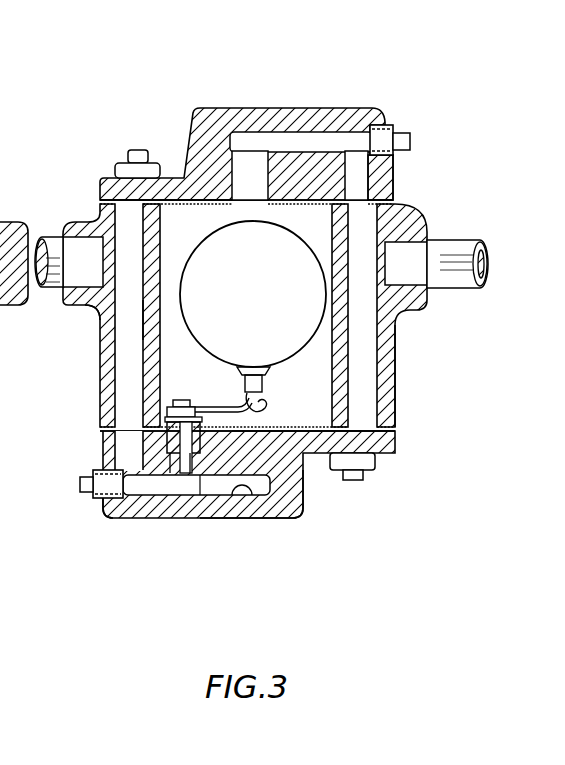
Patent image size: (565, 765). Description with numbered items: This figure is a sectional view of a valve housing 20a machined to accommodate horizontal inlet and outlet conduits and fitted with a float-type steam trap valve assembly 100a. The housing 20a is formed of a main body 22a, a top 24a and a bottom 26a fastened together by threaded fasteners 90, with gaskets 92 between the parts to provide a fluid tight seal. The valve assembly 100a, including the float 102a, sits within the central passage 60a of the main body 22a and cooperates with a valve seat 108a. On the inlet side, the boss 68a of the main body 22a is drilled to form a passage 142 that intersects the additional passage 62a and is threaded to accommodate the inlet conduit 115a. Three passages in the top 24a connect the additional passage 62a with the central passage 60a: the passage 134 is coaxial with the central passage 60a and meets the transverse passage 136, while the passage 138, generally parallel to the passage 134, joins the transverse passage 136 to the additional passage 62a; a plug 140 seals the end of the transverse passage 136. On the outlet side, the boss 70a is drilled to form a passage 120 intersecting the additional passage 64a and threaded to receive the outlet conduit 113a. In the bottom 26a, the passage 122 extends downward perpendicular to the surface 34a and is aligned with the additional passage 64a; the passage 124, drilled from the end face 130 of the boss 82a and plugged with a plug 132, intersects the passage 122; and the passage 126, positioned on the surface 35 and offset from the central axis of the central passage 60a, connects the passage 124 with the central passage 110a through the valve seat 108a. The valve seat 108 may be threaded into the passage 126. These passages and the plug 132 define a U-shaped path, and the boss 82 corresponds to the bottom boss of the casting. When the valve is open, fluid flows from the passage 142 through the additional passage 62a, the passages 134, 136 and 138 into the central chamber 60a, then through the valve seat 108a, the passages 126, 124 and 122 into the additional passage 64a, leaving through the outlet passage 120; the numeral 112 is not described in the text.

The valve housing 20a is at (143, 143).
The main body 22a is at (396, 380).
The top 24a is at (380, 100).
The bottom 26a is at (318, 511).
The surface of the bottom 34a is at (128, 415).
The surface of the bottom 35 is at (298, 430).
The central passage 60a is at (160, 325).
The additional passage 62a is at (393, 225).
The additional passage 64a is at (113, 224).
The boss 68a is at (396, 312).
The boss 70a is at (84, 330).
The boss 82 is at (0, 534).
The boss 82a is at (290, 519).
The threaded fasteners 90 is at (3, 140).
The gaskets 92 is at (0, 213).
The steam trap valve assembly 100a is at (213, 368).
The float 102a is at (278, 208).
The valve seat 108 is at (0, 433).
The valve seat 108a is at (332, 488).
The central passage 110a is at (197, 470).
The line 112 is at (2, 566).
The outlet conduit 113a is at (50, 290).
The inlet conduit 115a is at (465, 242).
The passage 120 is at (78, 292).
The passage 122 is at (133, 453).
The passage 124 is at (250, 496).
The passage 126 is at (202, 462).
The end face 130 is at (104, 510).
The plug 132 is at (100, 493).
The passage 134 is at (242, 167).
The transverse passage 136 is at (285, 143).
The passage 138 is at (378, 187).
The plug 140 is at (395, 130).
The passage 142 is at (405, 245).